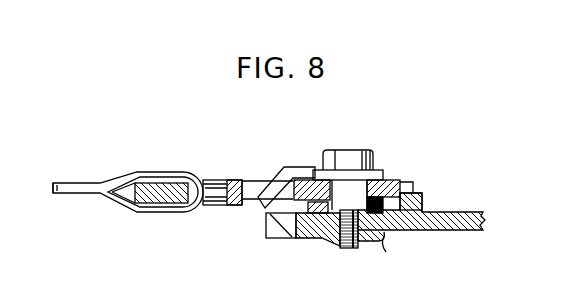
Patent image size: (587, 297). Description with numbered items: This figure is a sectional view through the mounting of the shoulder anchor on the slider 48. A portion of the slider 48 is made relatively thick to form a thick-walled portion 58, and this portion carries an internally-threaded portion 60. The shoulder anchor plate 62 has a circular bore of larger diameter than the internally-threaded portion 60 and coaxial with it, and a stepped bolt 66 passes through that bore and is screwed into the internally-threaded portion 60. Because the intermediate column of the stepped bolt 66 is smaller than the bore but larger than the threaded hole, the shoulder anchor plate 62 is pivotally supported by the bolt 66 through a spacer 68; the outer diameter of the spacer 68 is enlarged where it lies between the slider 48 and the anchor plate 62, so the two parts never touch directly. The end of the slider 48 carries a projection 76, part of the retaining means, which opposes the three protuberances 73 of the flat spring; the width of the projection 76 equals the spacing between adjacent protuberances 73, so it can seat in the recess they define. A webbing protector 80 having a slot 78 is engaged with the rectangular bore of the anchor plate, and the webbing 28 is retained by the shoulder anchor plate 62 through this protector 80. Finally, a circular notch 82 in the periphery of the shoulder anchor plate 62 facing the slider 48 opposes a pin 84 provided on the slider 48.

The webbing 28 is at (156, 172).
The slot 78 is at (216, 180).
The webbing protector 80 is at (214, 206).
The shoulder anchor plate 62 is at (261, 179).
The protuberances 73 is at (262, 209).
The circular notch 82 is at (406, 178).
The stepped bolt 66 is at (358, 149).
The internally-threaded portion 60 is at (350, 244).
The projection 76 is at (268, 221).
The spacer 68 is at (296, 215).
The pin 84 is at (420, 196).
The slider 48 is at (450, 210).
The thick-walled portion 58 is at (376, 245).